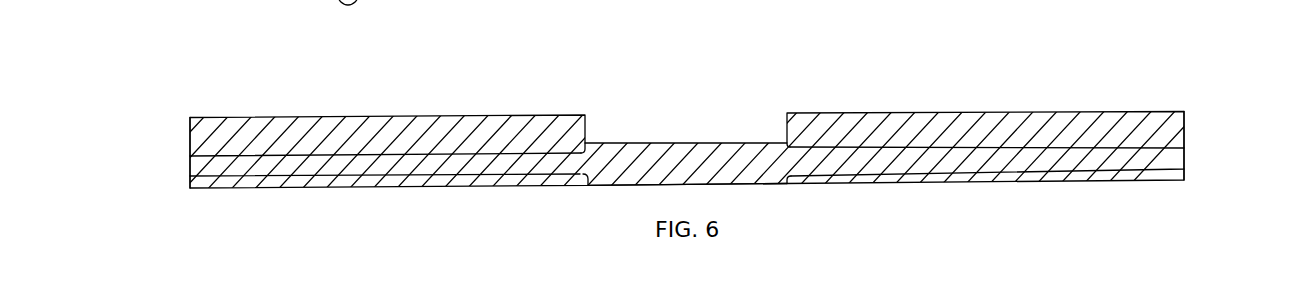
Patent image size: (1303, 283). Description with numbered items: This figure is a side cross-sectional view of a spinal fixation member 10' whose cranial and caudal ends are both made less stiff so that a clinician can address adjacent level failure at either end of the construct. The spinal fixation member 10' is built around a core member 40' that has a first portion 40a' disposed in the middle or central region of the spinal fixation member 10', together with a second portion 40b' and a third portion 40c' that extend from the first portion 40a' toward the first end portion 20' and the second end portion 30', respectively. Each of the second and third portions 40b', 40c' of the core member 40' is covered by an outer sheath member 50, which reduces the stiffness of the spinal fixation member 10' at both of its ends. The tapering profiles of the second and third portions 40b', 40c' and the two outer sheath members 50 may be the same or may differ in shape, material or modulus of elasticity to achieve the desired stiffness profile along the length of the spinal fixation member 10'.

The spinal fixation member 10' is at (635, 106).
The first end portion 20' is at (389, 216).
The second end portion 30' is at (985, 205).
The core member 40' is at (687, 130).
The first portion 40a' is at (703, 213).
The second portion 40b' is at (147, 167).
The third portion 40c' is at (1233, 146).
The outer sheath member 50 is at (315, 117).